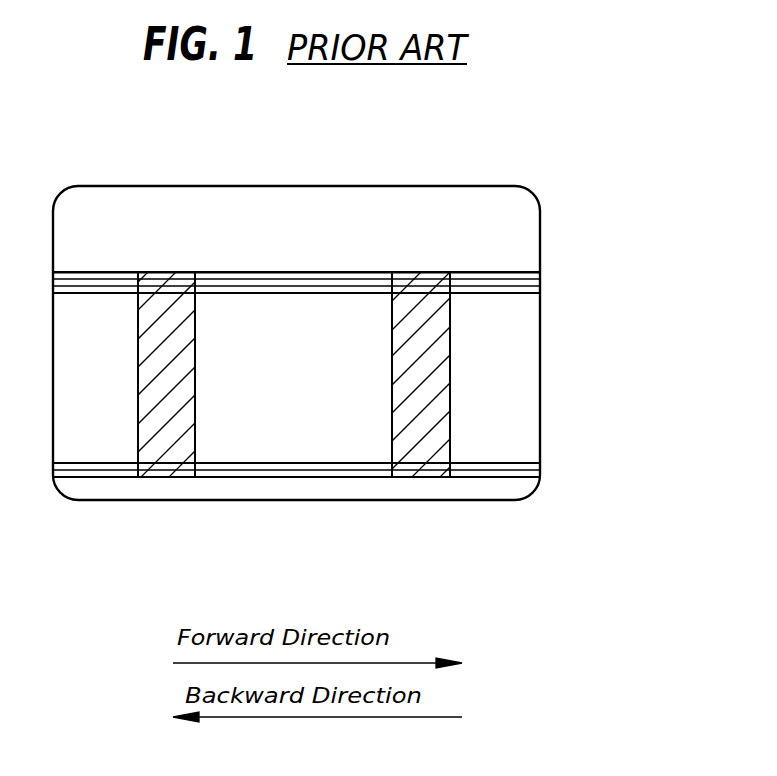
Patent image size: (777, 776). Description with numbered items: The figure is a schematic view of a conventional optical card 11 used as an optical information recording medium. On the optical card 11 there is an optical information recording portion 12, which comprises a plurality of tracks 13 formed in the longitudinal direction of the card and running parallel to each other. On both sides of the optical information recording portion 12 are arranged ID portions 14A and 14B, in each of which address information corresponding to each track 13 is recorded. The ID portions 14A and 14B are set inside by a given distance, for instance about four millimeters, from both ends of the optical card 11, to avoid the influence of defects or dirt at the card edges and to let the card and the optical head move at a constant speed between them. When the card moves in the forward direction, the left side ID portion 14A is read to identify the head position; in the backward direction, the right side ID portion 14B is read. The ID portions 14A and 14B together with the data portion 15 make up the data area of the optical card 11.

The optical card 11 is at (260, 503).
The optical information recording portion 12 is at (553, 273).
The track 13 is at (513, 275).
The ID portion 14A is at (140, 452).
The ID portion 14B is at (445, 428).
The data portion 15 is at (349, 445).